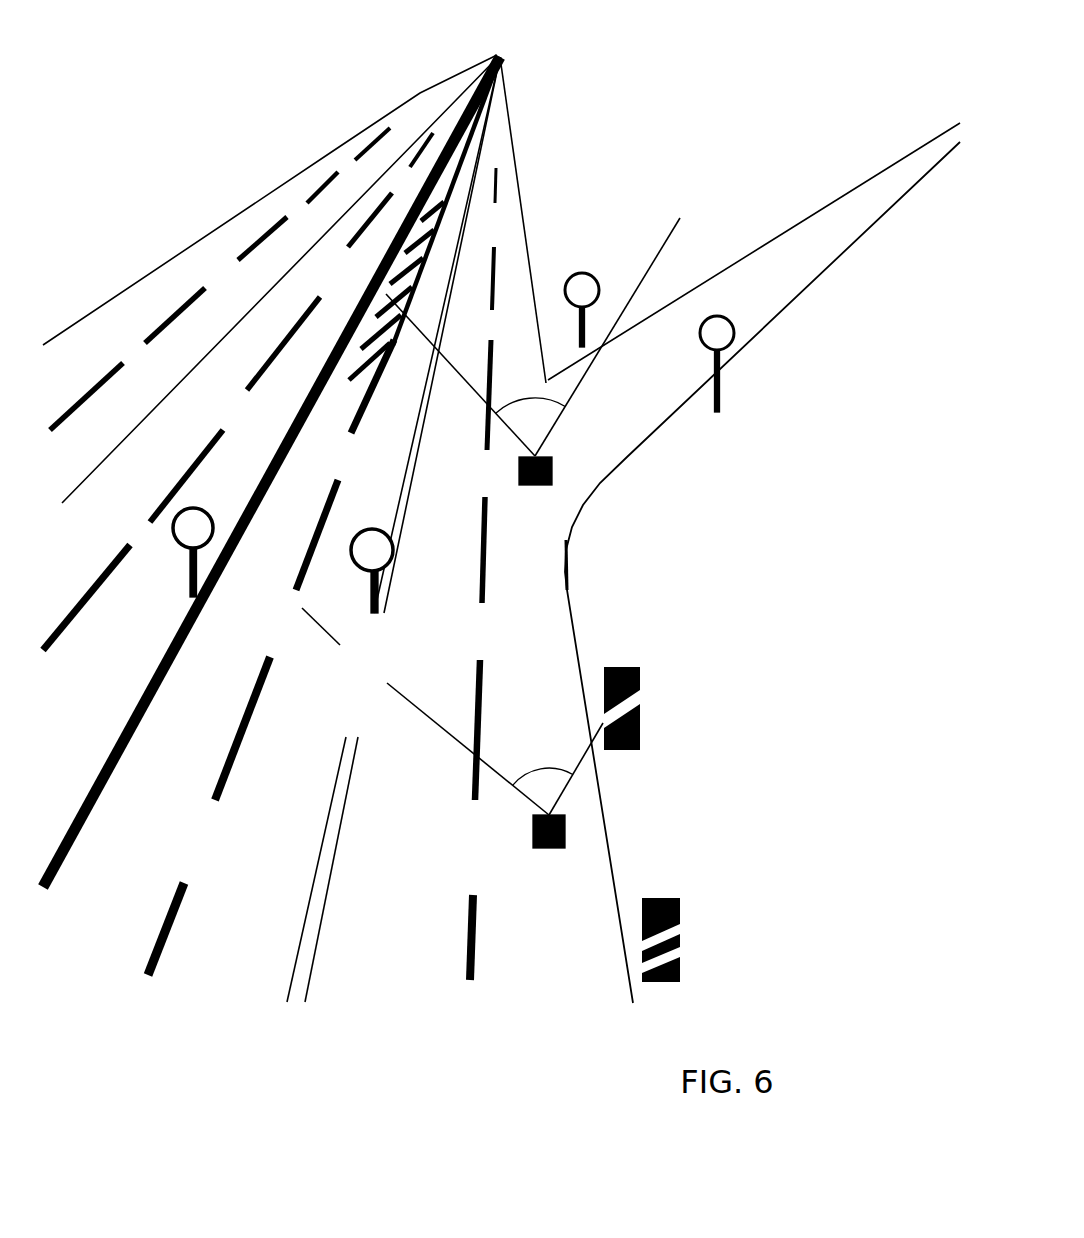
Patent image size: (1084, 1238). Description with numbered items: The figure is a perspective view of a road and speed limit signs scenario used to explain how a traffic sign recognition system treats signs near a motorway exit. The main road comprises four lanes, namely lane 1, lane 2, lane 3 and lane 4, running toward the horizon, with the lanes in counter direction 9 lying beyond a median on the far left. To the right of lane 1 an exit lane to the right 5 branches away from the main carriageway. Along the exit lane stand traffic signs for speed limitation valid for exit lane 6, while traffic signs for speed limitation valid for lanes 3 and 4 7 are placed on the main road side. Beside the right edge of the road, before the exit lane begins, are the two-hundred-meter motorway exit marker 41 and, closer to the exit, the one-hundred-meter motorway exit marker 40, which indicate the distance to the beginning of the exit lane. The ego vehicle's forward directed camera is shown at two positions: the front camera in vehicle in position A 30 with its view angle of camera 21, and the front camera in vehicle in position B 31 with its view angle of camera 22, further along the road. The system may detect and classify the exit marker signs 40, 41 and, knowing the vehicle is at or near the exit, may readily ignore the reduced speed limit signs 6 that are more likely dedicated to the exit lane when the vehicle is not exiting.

The lane 1 is at (543, 955).
The lane 2 is at (372, 952).
The lane 3 is at (222, 953).
The lane 4 is at (67, 953).
The exit lane to the right 5 is at (787, 277).
The traffic signs for speed limitation valid for exit lane 6 is at (589, 271).
The traffic signs for speed limitation valid for lanes 3 and 4 7 is at (372, 528).
The lanes in counter direction 9 is at (270, 336).
The view angle of camera 21 is at (543, 768).
The view angle of camera 22 is at (521, 393).
The front camera in vehicle in position A 30 is at (562, 850).
The front camera in vehicle in position B 31 is at (533, 365).
The motorway exit marker 100 m 40 is at (636, 668).
The motorway exit marker 200 m 41 is at (672, 900).